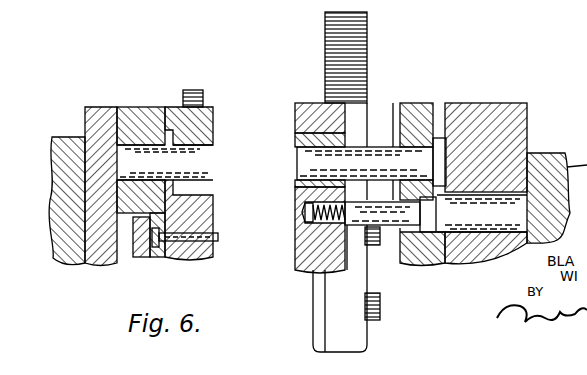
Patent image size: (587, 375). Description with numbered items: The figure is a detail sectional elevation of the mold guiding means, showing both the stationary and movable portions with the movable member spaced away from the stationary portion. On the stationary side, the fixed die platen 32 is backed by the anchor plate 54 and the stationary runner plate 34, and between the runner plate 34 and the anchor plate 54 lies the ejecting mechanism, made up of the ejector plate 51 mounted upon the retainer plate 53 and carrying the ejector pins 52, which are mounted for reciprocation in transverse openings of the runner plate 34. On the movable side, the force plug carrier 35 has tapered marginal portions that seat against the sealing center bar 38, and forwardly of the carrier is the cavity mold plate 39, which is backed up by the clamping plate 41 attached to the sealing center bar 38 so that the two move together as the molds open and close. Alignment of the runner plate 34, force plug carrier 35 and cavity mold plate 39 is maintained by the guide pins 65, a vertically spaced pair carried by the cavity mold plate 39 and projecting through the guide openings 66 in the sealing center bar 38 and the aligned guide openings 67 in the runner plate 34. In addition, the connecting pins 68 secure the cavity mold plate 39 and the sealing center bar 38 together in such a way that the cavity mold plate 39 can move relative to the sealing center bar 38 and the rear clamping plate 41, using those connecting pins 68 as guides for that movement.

The fixed die platen 32 is at (72, 252).
The anchor plate 54 is at (97, 257).
The retainer plate 53 is at (140, 253).
The ejector plate 51 is at (155, 252).
The stationary runner plate 34 is at (197, 253).
The guide openings 67 is at (202, 158).
The ejector pins 52 is at (218, 237).
The guide openings 66 is at (303, 137).
The guide pins 65 is at (368, 152).
The force plug carrier 35 is at (360, 44).
The sealing center bar 38 is at (300, 258).
The connecting pins 68 is at (400, 213).
The cavity mold plate 39 is at (432, 255).
The clamping plate 41 is at (482, 250).